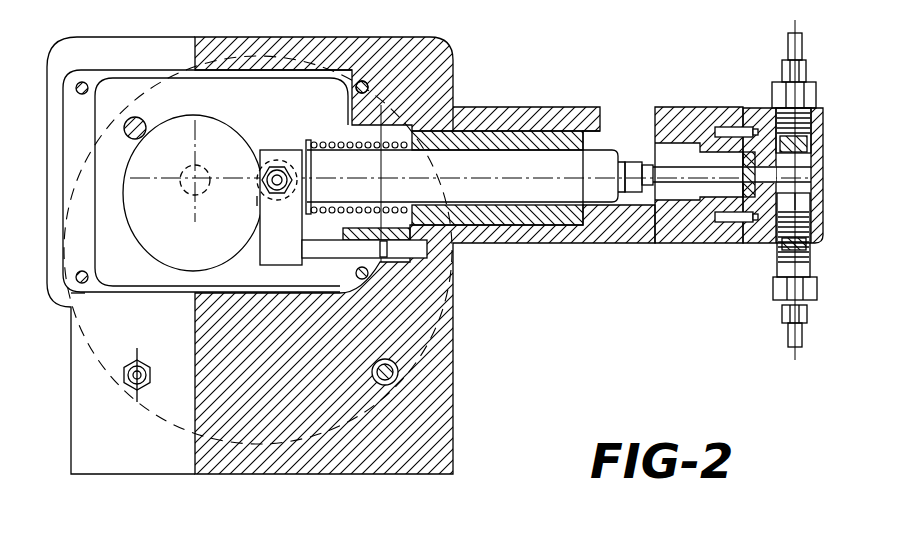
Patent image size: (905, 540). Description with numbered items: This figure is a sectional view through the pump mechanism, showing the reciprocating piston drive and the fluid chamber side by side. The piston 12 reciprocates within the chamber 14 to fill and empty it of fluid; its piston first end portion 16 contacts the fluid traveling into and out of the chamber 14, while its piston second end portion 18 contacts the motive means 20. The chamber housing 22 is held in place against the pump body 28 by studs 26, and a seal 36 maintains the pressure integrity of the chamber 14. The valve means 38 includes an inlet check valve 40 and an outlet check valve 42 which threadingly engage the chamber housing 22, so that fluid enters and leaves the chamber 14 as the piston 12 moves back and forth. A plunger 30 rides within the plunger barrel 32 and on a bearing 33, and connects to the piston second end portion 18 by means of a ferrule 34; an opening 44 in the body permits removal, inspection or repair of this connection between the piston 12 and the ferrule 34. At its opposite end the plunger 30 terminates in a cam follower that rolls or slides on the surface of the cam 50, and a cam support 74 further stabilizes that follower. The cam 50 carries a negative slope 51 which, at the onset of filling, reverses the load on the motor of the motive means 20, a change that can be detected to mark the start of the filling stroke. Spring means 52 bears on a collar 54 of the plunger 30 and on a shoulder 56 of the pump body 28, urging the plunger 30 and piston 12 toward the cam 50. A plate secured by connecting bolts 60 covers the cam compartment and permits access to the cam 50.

The piston 12 is at (672, 162).
The chamber 14 is at (823, 190).
The piston first end portion 16 is at (775, 166).
The piston second end portion 18 is at (660, 205).
The motive means 20 is at (277, 148).
The chamber housing 22 is at (818, 110).
The studs 26 is at (727, 130).
The pump body 28 is at (531, 113).
The plunger 30 is at (493, 150).
The plunger barrel 32 is at (622, 225).
The bearing 33 is at (531, 225).
The ferrule 34 is at (633, 162).
The seal 36 is at (770, 243).
The valve means 38 is at (810, 82).
The inlet check valve 40 is at (772, 302).
The outlet check valve 42 is at (823, 127).
The opening 44 is at (617, 116).
The cam 50 is at (213, 130).
The negative slope 51 is at (257, 200).
The spring means 52 is at (454, 97).
The collar 54 is at (308, 142).
The shoulder 56 is at (430, 243).
The connecting bolts 60 is at (84, 82).
The cam support 74 is at (360, 247).